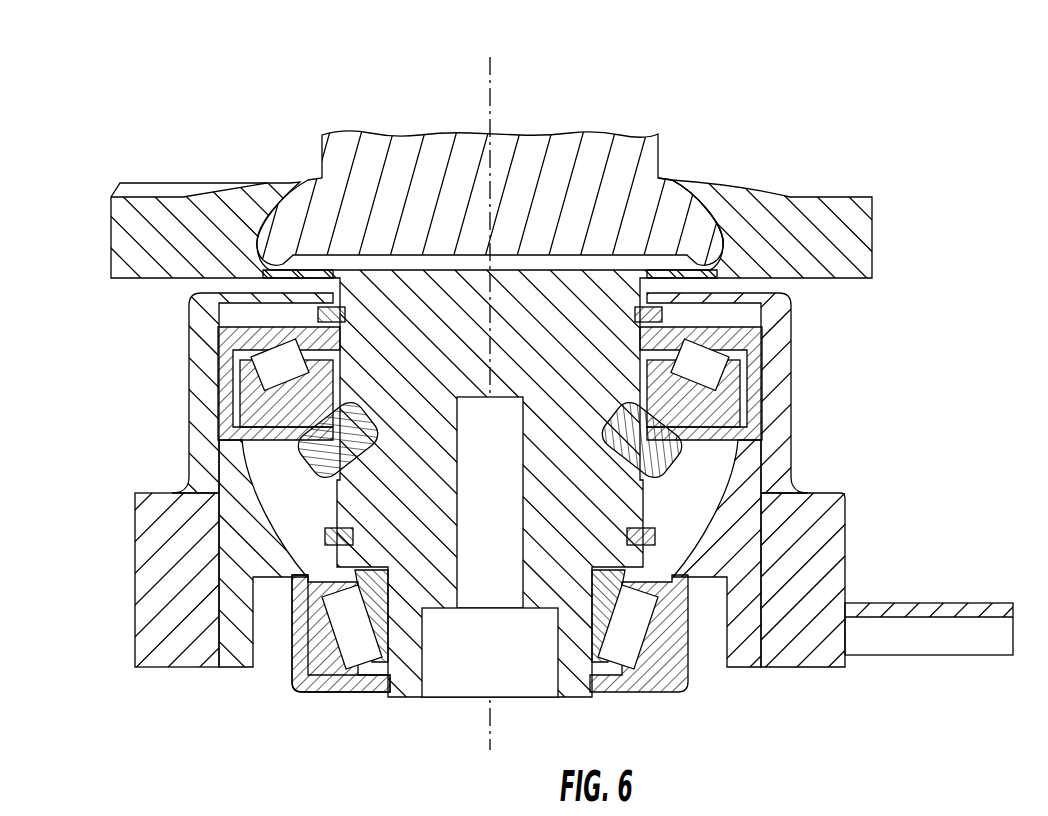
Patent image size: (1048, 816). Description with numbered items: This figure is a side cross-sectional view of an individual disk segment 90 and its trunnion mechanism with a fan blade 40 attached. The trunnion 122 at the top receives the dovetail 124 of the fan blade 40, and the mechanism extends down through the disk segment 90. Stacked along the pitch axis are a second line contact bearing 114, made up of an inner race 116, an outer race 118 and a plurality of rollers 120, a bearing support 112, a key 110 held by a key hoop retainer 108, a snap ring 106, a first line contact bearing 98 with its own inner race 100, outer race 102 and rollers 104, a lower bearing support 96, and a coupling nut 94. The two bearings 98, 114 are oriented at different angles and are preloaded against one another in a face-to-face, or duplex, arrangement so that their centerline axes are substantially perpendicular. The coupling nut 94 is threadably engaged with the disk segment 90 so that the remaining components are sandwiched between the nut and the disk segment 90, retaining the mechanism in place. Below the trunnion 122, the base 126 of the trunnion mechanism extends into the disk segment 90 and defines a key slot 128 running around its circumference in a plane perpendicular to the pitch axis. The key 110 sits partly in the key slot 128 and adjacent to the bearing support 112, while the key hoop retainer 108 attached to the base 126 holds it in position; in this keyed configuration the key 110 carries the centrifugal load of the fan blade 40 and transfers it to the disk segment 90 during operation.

The fan blade 40 is at (592, 130).
The disk segment 90 is at (845, 493).
The coupling nut 94 is at (232, 657).
The lower bearing support 96 is at (690, 688).
The first line contact bearing 98 is at (378, 702).
The inner race 100 is at (380, 618).
The outer race 102 is at (326, 660).
The rollers 104 is at (307, 683).
The snap ring 106 is at (650, 537).
The key hoop retainer 108 is at (700, 470).
The key 110 is at (657, 430).
The bearing support 112 is at (265, 430).
The second line contact bearing 114 is at (740, 330).
The inner race 116 is at (250, 398).
The outer race 118 is at (233, 342).
The rollers 120 is at (270, 355).
The trunnion 122 is at (770, 192).
The dovetail 124 is at (628, 182).
The base 126 is at (397, 508).
The key slot 128 is at (670, 383).